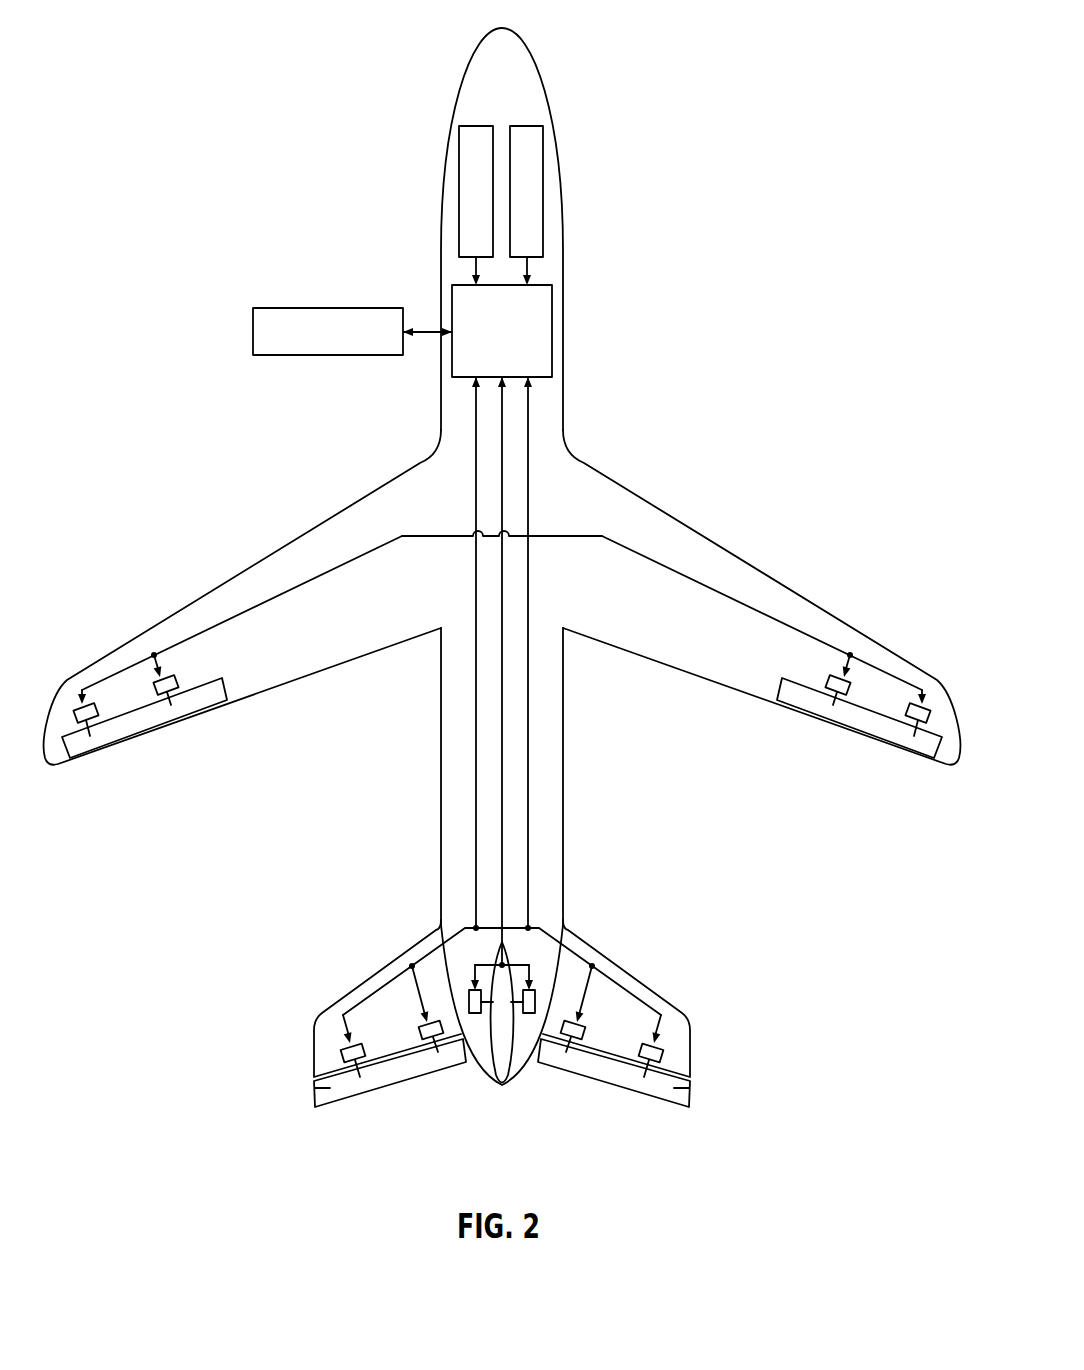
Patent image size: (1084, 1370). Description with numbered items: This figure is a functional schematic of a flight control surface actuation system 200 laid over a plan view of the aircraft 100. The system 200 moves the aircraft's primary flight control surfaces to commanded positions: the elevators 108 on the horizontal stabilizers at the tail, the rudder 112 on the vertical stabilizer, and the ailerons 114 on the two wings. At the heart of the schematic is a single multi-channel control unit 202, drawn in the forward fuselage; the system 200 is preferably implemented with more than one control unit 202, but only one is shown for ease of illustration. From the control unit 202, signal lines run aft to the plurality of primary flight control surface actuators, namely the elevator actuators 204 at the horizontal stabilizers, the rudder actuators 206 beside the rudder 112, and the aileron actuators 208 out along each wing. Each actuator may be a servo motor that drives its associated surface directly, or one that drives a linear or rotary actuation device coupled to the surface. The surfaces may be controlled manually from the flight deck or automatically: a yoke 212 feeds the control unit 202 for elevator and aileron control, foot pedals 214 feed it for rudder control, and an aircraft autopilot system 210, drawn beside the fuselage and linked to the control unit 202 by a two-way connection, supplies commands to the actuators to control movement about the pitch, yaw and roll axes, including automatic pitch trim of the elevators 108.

The aircraft 100 is at (500, 27).
The flight control surface actuation system 200 is at (497, 112).
The control unit 202 is at (552, 330).
The elevator actuators 204 is at (427, 1027).
The rudder actuators 206 is at (476, 1014).
The aileron actuators 208 is at (170, 704).
The aircraft autopilot system 210 is at (323, 307).
The yoke 212 is at (459, 190).
The foot pedals 214 is at (543, 190).
The elevator 108 is at (313, 1100).
The rudder 112 is at (499, 1087).
The aileron 114 is at (215, 698).